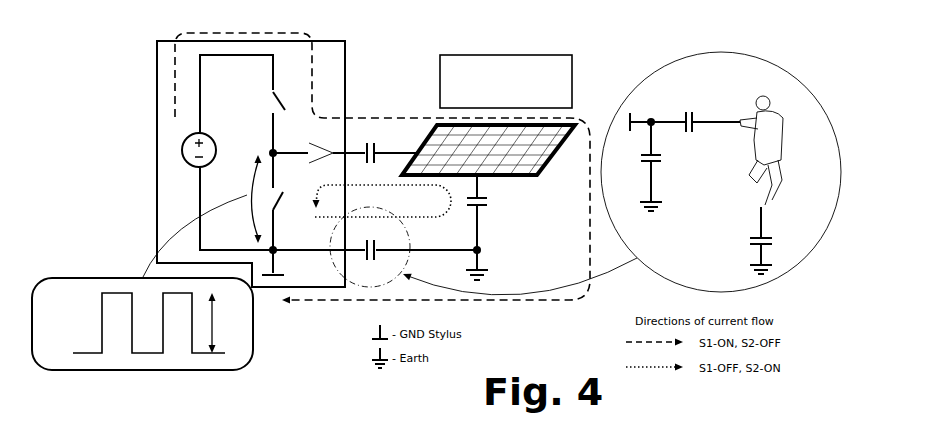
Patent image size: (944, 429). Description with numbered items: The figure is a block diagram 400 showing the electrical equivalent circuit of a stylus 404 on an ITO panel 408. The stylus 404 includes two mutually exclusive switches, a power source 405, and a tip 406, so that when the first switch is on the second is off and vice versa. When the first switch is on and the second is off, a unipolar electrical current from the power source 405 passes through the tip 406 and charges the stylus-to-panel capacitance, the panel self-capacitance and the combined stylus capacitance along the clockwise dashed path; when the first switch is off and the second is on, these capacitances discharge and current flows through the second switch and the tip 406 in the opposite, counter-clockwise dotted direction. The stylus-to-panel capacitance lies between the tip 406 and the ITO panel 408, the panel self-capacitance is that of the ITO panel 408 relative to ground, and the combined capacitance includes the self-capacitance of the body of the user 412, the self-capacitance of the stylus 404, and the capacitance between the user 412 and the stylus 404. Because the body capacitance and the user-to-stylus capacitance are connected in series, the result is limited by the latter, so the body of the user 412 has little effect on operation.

The block diagram 400 is at (400, 58).
The stylus 404 is at (157, 95).
The power source 405 is at (182, 150).
The tip 406 is at (320, 148).
The ITO panel 408 is at (533, 178).
The user 412 is at (773, 110).